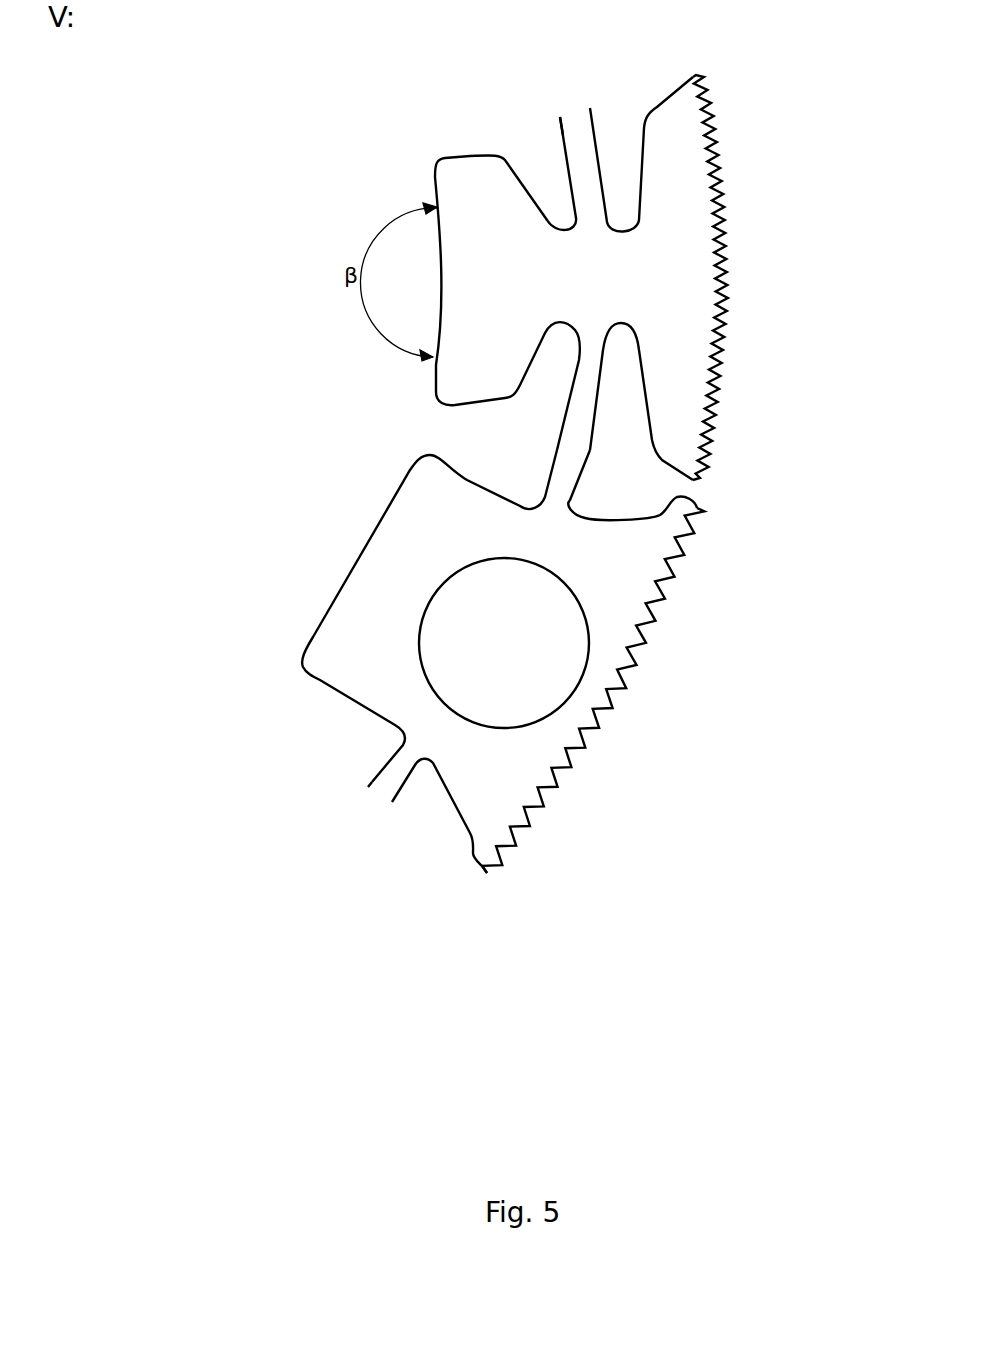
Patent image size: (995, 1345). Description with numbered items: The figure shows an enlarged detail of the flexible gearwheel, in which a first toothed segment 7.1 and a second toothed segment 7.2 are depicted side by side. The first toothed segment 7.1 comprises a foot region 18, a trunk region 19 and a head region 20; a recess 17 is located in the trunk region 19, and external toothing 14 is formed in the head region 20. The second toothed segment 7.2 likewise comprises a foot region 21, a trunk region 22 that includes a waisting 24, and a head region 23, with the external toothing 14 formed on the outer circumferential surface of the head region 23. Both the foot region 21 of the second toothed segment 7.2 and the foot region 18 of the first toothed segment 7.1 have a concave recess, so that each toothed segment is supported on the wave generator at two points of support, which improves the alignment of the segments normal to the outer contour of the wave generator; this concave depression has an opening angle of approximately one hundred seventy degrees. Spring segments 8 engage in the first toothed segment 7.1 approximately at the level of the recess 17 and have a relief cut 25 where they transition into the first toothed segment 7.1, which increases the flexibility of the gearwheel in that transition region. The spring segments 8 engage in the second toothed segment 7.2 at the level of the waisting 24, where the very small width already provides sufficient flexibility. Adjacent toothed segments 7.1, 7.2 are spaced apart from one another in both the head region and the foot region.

The first toothed segment 7.1 is at (614, 690).
The second toothed segment 7.2 is at (756, 277).
The spring segment 8 is at (582, 150).
The external toothing 14 is at (668, 469).
The recess 17 is at (533, 655).
The foot region 18 is at (390, 505).
The trunk region 19 is at (557, 547).
The head region 20 is at (638, 603).
The foot region 21 is at (432, 182).
The trunk region 22 is at (713, 378).
The head region 23 is at (680, 197).
The waisting 24 is at (593, 277).
The relief cut 25 is at (430, 778).